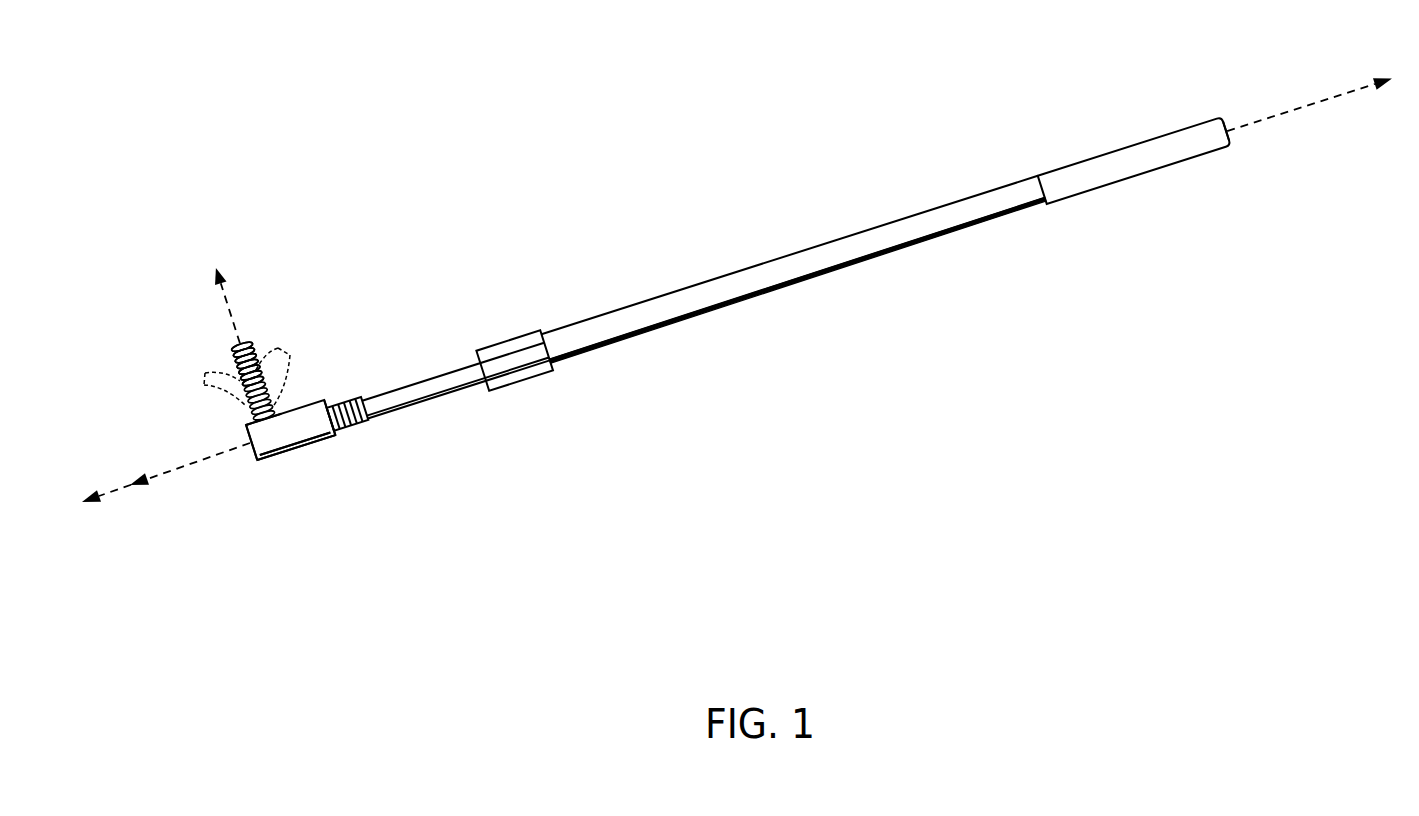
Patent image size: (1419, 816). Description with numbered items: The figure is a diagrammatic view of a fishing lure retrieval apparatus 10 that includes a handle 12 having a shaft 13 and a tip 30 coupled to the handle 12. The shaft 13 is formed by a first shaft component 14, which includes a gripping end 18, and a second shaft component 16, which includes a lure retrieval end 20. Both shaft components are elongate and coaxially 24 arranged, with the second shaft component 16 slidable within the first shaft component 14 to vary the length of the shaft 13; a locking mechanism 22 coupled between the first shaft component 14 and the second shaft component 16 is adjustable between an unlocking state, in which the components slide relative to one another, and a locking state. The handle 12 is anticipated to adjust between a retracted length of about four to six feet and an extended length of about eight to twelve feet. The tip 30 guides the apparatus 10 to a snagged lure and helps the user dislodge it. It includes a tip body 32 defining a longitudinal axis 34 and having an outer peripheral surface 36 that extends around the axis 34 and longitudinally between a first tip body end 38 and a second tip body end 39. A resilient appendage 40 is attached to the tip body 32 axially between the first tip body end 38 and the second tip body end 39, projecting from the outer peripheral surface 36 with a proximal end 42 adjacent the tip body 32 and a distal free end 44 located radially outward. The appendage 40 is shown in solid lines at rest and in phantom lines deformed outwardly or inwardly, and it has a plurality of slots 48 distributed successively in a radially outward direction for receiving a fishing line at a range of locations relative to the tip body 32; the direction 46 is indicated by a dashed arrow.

The fishing lure retrieval apparatus 10 is at (366, 146).
The handle 12 is at (792, 306).
The shaft 13 is at (755, 316).
The first shaft component 14 is at (850, 234).
The second shaft component 16 is at (413, 406).
The gripping end 18 is at (1235, 167).
The lure retrieval end 20 is at (348, 450).
The locking mechanism 22 is at (528, 378).
The coaxial arrangement 24 is at (1302, 107).
The tip 30 is at (302, 384).
The tip body 32 is at (287, 467).
The longitudinal axis 34 is at (181, 472).
The outer peripheral surface 36 is at (317, 441).
The first tip body end 38 is at (341, 392).
The second tip body end 39 is at (234, 437).
The resilient appendage 40 is at (243, 402).
The proximal end 42 is at (268, 432).
The distal free end 44 is at (260, 340).
The spring axis 46 is at (229, 313).
The slots 48 is at (236, 360).